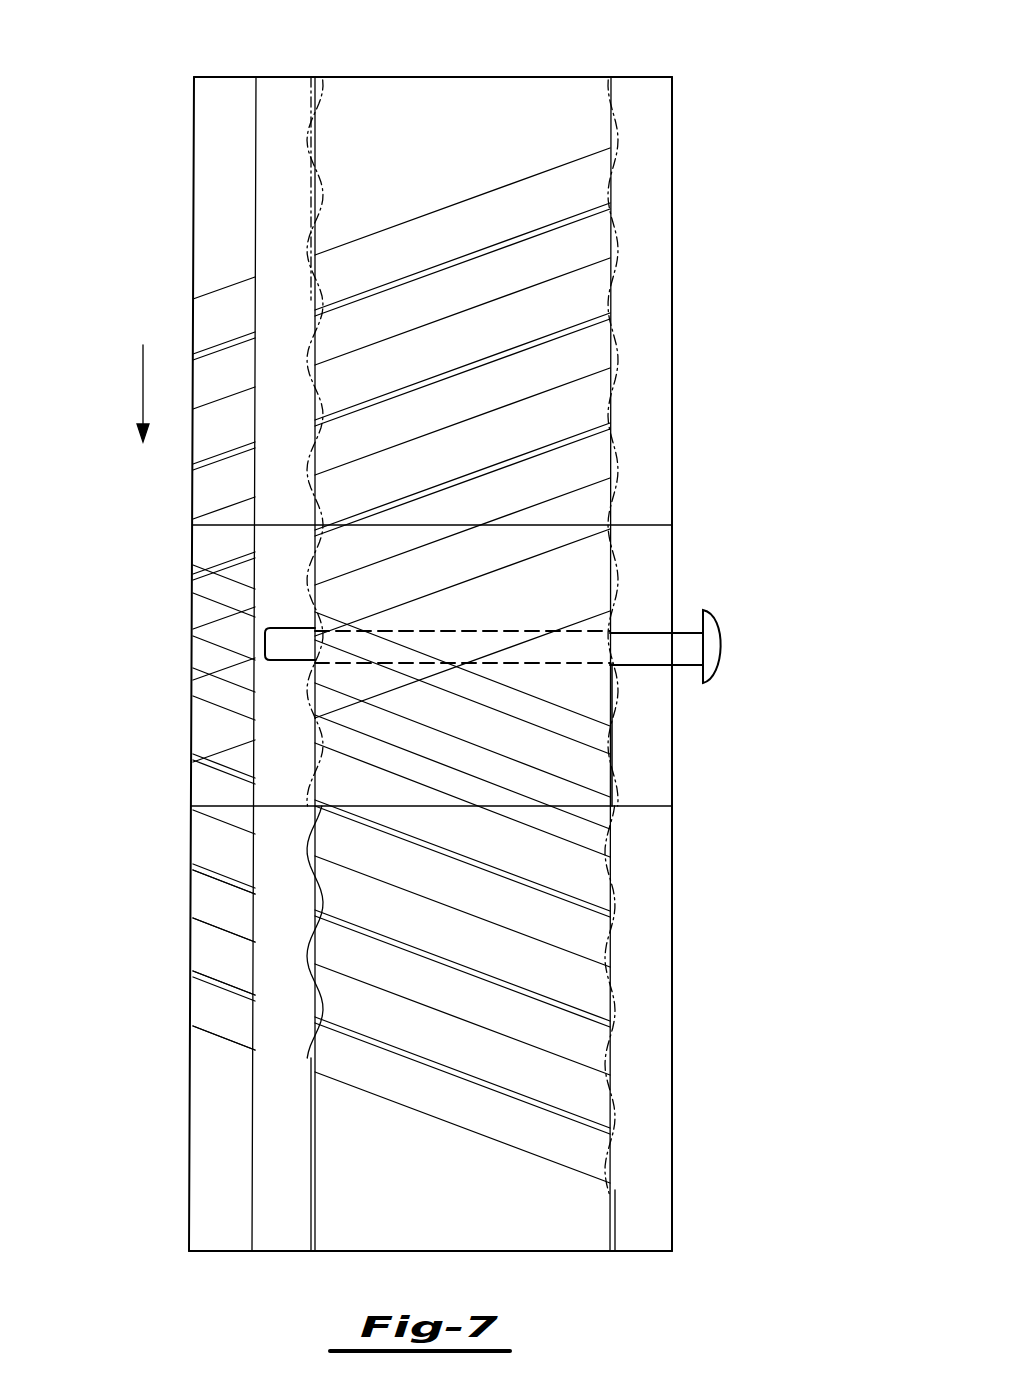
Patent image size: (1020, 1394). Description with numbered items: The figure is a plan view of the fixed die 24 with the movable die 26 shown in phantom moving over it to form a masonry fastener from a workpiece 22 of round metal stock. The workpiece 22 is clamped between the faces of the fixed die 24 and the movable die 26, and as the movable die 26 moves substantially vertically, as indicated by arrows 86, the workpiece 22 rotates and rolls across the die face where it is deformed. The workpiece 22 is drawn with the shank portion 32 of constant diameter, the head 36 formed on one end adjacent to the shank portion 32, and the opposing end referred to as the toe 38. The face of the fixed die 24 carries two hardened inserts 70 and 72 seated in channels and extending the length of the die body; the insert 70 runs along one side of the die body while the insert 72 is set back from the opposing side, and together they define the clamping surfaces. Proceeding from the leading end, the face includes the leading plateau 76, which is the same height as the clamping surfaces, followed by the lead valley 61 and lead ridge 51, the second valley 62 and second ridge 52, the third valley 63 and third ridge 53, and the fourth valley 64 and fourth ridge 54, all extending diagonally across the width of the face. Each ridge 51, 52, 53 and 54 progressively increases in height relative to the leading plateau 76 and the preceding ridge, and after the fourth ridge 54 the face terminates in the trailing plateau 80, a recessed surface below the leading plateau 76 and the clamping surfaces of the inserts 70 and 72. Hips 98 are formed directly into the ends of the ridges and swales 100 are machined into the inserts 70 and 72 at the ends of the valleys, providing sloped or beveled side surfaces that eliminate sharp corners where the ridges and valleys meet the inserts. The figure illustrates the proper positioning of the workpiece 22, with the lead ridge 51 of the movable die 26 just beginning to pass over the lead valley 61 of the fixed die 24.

The workpiece 22 is at (733, 621).
The fixed die 24 is at (672, 1068).
The movable die 26 is at (672, 190).
The shank portion 32 is at (640, 652).
The head 36 is at (727, 647).
The toe 38 is at (287, 648).
The lead ridge 51 is at (590, 450).
The second ridge 52 is at (593, 333).
The third ridge 53 is at (340, 920).
The fourth ridge 54 is at (340, 1028).
The lead valley 61 is at (570, 495).
The second valley 62 is at (590, 370).
The third valley 63 is at (340, 870).
The fourth valley 64 is at (350, 977).
The hardened insert 70 is at (640, 266).
The hardened insert 72 is at (277, 247).
The leading plateau 76 is at (590, 692).
The trailing plateau 80 is at (495, 671).
The arrows 86 is at (140, 388).
The hips 98 is at (603, 1023).
The swales 100 is at (613, 962).